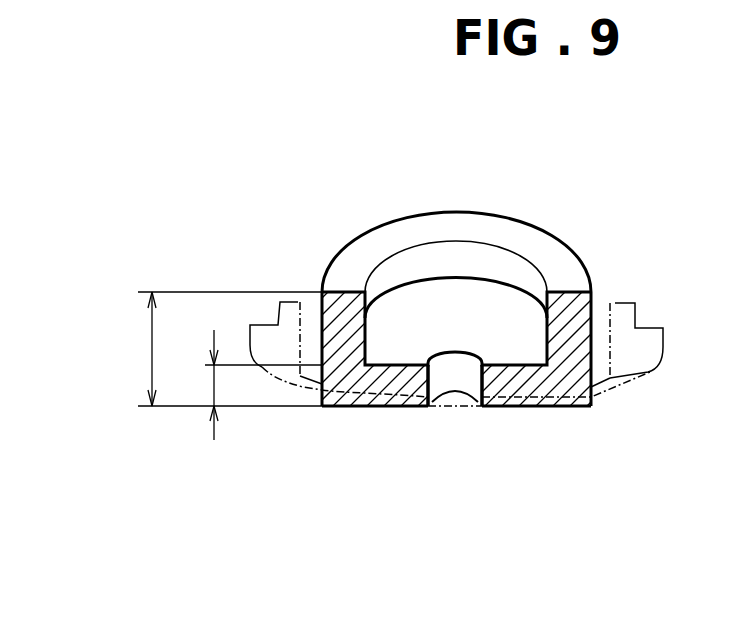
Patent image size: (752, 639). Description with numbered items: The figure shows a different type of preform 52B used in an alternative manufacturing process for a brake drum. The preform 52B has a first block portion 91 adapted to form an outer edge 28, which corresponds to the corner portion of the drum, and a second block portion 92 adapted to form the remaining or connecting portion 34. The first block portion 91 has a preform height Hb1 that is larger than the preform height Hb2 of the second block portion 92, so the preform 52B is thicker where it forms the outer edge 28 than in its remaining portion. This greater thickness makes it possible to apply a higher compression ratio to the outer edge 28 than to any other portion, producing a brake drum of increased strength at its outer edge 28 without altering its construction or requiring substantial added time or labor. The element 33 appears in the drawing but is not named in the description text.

The preform 52B is at (355, 210).
The first block portion 91 is at (350, 279).
The second block portion 92 is at (436, 304).
The rib 33 is at (257, 307).
The outer edge 28 is at (302, 386).
The connecting portion 34 is at (395, 407).
The preform height of the first block portion Hb1 is at (197, 349).
The preform height of the second block portion Hb2 is at (253, 403).